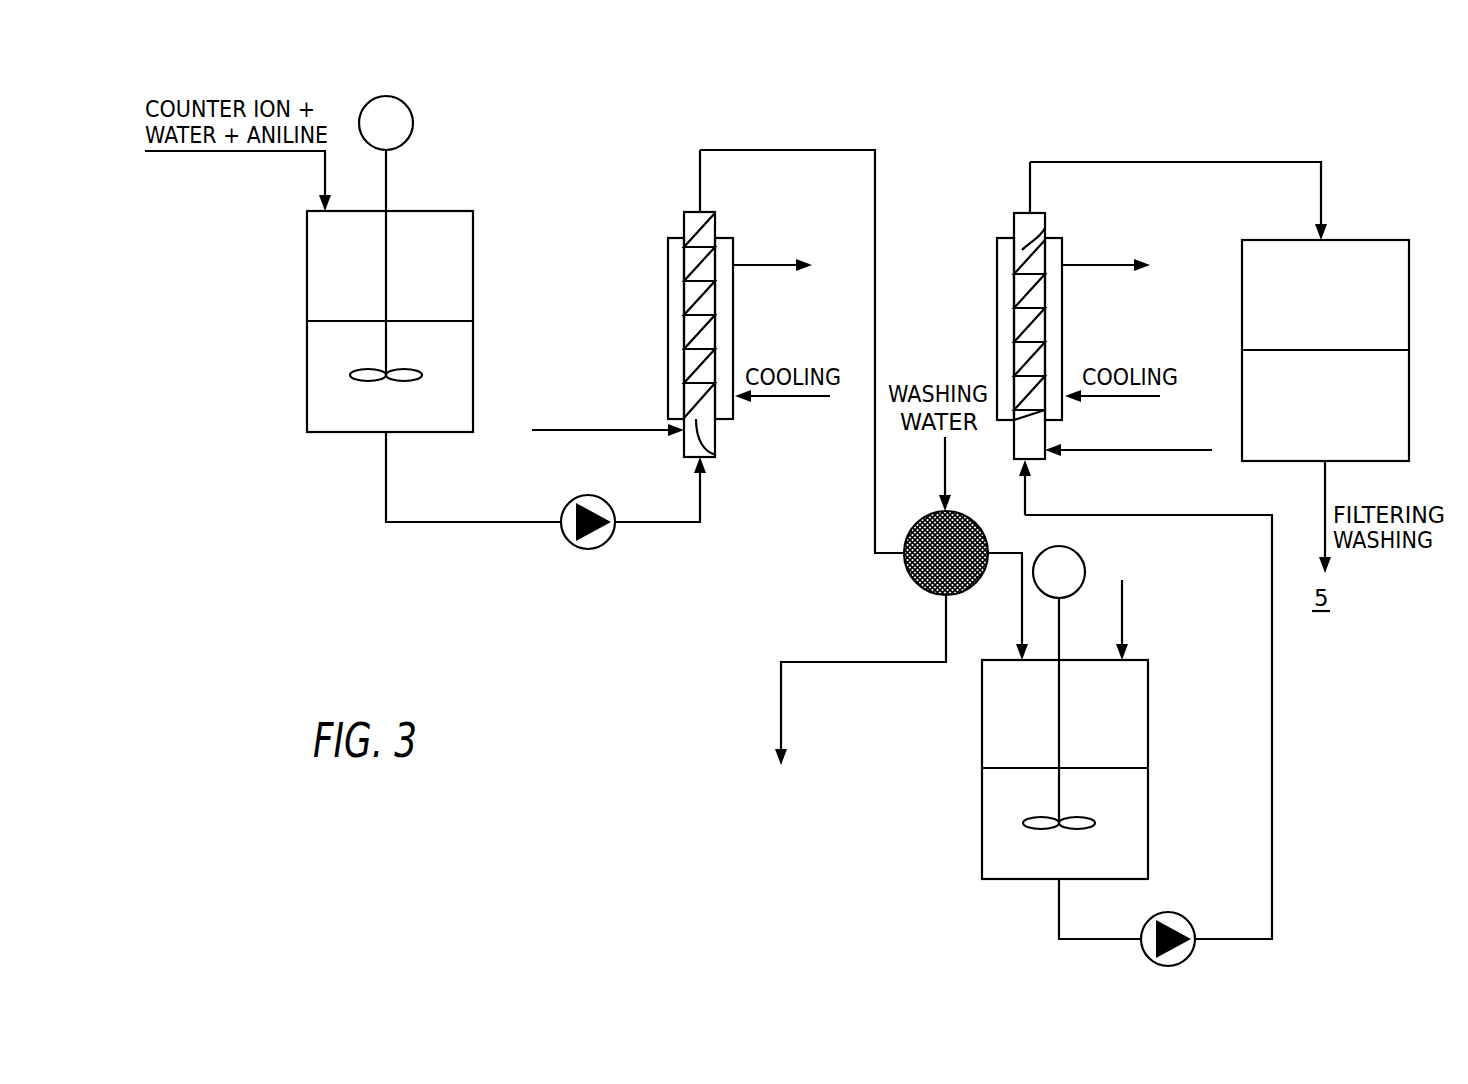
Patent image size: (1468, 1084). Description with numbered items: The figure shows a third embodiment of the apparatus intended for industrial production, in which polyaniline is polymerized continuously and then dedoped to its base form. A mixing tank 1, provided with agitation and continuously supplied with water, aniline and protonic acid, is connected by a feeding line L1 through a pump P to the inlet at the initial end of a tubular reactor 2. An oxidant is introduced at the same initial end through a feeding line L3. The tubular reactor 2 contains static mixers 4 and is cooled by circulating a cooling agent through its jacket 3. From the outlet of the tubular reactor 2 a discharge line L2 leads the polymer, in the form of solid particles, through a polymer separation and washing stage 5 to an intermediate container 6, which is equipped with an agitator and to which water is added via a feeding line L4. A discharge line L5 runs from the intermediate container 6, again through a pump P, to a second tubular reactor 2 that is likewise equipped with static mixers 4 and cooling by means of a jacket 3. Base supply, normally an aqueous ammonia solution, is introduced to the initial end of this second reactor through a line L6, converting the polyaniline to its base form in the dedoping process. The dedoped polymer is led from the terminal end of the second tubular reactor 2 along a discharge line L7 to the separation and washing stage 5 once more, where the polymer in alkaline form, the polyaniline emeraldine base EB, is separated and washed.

The mixing tank 1 is at (307, 272).
The tubular reactor 2 is at (684, 221).
The jacket 3 is at (733, 293).
The static mixers 4 is at (715, 213).
The polymer separation and washing stage 5 is at (932, 594).
The intermediate container 6 is at (982, 748).
The feeding line L1 is at (488, 522).
The discharge line L2 is at (826, 150).
The feeding line for oxidant L3 is at (591, 437).
The feeding line for water L4 is at (1124, 622).
The discharge line L5 is at (1272, 808).
The base supply line L6 is at (1098, 452).
The discharge line L7 is at (1141, 162).
The pump P is at (611, 536).
The polyaniline emeraldine base EB is at (1372, 350).